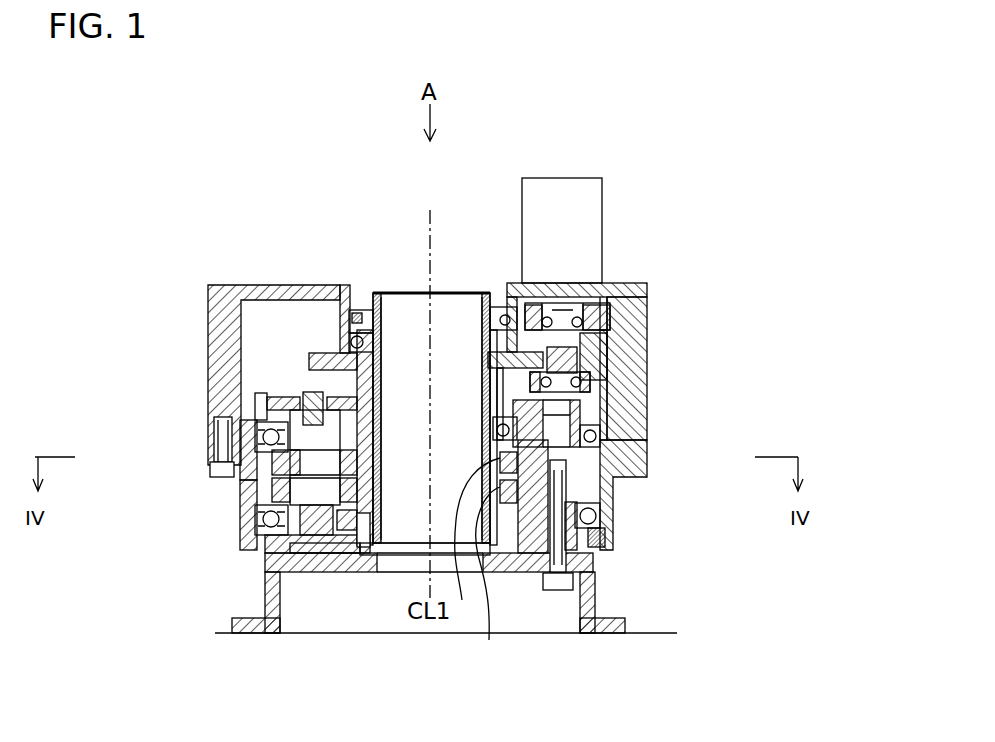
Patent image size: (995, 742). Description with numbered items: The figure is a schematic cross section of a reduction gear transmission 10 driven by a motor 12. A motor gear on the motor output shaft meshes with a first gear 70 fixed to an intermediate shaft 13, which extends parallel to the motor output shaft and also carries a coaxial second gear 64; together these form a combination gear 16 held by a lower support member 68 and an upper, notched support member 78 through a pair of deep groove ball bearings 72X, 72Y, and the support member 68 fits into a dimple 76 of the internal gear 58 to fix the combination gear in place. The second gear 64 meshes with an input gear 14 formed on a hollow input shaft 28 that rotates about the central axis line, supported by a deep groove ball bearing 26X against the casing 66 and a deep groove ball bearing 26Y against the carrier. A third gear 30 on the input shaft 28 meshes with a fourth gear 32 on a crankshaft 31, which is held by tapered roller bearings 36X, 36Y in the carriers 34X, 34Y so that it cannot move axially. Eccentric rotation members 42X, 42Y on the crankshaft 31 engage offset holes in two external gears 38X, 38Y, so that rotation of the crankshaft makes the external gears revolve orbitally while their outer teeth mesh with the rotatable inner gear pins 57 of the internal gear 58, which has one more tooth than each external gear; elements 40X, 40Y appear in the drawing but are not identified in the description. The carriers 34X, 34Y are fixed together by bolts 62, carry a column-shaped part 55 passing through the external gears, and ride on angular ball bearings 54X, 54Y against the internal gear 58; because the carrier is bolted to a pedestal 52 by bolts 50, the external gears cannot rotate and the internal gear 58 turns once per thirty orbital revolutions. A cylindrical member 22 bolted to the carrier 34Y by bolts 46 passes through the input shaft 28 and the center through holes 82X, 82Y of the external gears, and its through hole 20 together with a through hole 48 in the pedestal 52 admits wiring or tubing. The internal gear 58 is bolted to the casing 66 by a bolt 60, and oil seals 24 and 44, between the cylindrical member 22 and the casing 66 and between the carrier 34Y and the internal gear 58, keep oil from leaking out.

The reduction gear transmission 10 is at (740, 207).
The motor 12 is at (580, 190).
The intermediate shaft 13 is at (560, 318).
The input gear 14 is at (516, 325).
The combination gear 16 is at (510, 345).
The through hole 20 is at (483, 350).
The cylindrical member 22 is at (378, 290).
The oil seal 24 is at (358, 318).
The deep groove ball bearing 26X is at (350, 310).
The deep groove ball bearing 26Y is at (262, 395).
The input shaft 28 is at (325, 353).
The third gear 30 is at (305, 392).
The crankshaft 31 is at (258, 366).
The fourth gear 32 is at (267, 400).
The carrier 34X is at (240, 410).
The carrier 34Y is at (272, 585).
The tapered roller bearing 36X is at (248, 432).
The tapered roller bearing 36Y is at (245, 540).
The external gear 38X is at (258, 445).
The external gear 38Y is at (242, 495).
The upper bearing retainer 40X is at (245, 462).
The lower bearing retainer 40Y is at (242, 510).
The eccentric rotation member 42X is at (245, 478).
The eccentric rotation member 42Y is at (242, 525).
The oil seal 44 is at (262, 548).
The bolts 46 is at (333, 555).
The through hole 48 is at (387, 555).
The bolts 50 is at (557, 590).
The pedestal 52 is at (584, 575).
The angular ball bearing 54X is at (600, 430).
The angular ball bearing 54Y is at (597, 540).
The column-shaped part 55 is at (530, 555).
The inner gear pins 57 is at (617, 503).
The internal gear 58 is at (617, 493).
The bolt 60 is at (215, 468).
The bolts 62 is at (580, 420).
The second gear 64 is at (575, 372).
The casing 66 is at (592, 358).
The support member 68 is at (578, 352).
The first gear 70 is at (600, 330).
The deep groove ball bearing 72X is at (590, 303).
The deep groove ball bearing 72Y is at (630, 310).
The dimple 76 is at (638, 468).
The support member 78 is at (640, 297).
The center through hole 82X is at (462, 600).
The center through hole 82Y is at (489, 640).